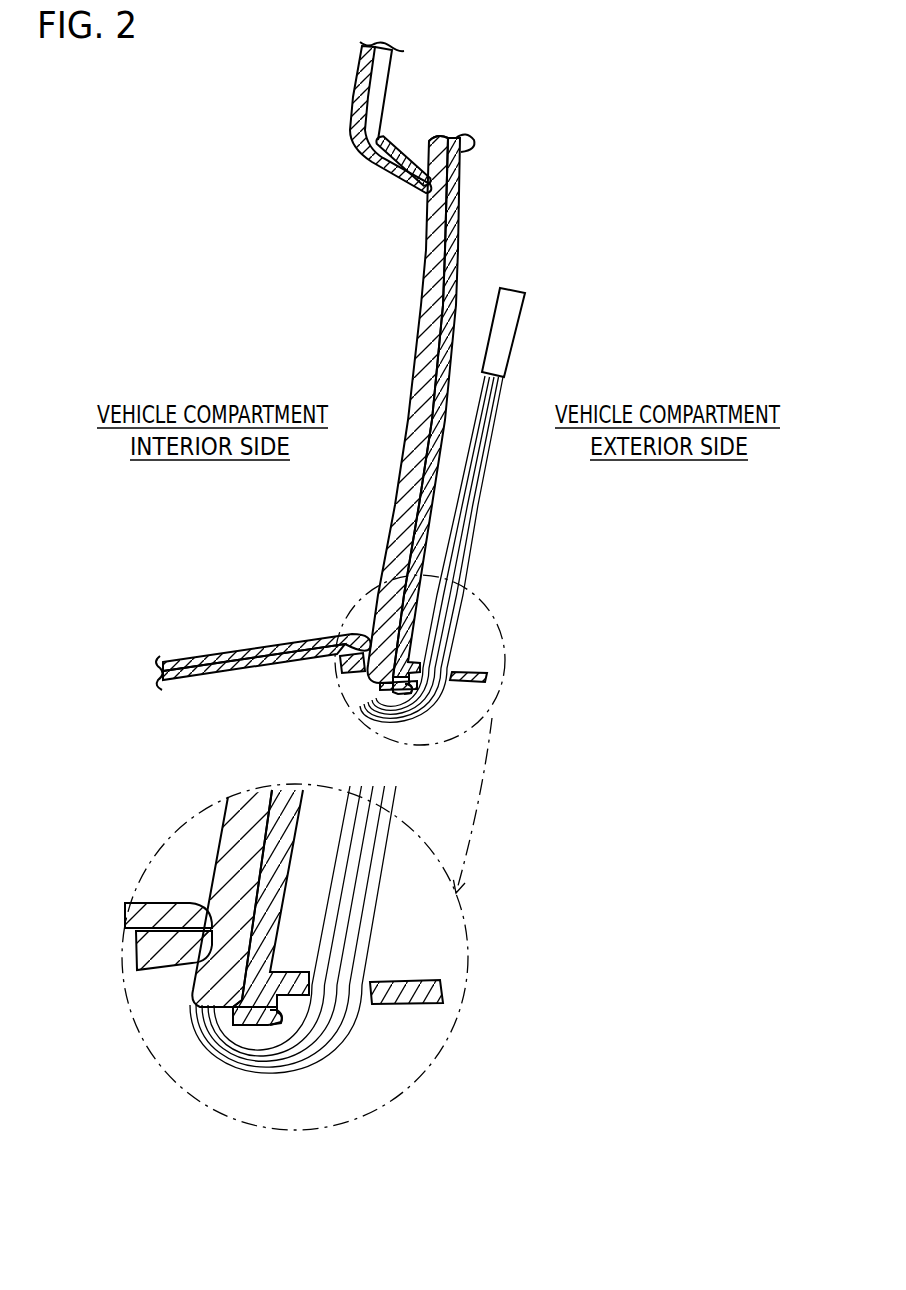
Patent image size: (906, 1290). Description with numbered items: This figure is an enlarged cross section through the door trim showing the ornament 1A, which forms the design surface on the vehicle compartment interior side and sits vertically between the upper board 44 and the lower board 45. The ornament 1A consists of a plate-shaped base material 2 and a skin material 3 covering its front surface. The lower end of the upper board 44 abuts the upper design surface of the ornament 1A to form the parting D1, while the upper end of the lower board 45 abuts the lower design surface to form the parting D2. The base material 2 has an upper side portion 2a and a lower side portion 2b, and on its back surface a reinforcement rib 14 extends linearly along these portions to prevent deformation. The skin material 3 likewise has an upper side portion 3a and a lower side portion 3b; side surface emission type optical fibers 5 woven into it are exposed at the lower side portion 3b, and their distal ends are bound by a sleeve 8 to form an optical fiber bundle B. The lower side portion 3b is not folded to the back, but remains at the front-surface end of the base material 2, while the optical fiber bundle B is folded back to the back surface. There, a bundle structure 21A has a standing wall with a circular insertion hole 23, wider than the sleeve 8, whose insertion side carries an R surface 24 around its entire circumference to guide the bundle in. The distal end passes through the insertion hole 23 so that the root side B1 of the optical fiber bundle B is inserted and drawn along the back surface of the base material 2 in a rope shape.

The base material 2 is at (462, 216).
The upper side portion 2a is at (462, 158).
The lower side portion 2b is at (452, 705).
The skin material 3 is at (420, 358).
The upper side portion 3a is at (431, 138).
The lower side portion 3b is at (364, 681).
The reinforcement rib 14 is at (467, 134).
The upper board 44 is at (365, 161).
The lower board 45 is at (318, 635).
The ornament 1A is at (406, 290).
The sleeve 8 is at (524, 331).
The optical fibers 5 is at (472, 548).
The bundle structure 21A is at (467, 664).
The insertion hole 23 is at (313, 990).
The R surface 24 is at (372, 1003).
The parting D1 is at (419, 200).
The parting D2 is at (370, 621).
The optical fiber bundle B is at (560, 487).
The root side B1 is at (458, 697).